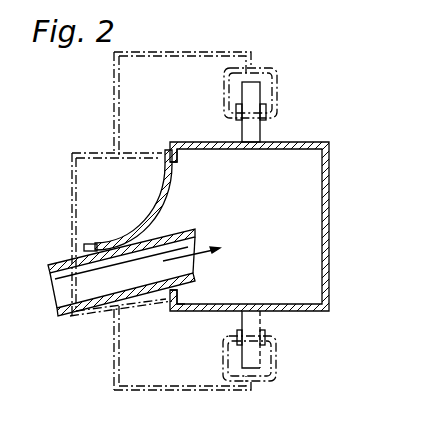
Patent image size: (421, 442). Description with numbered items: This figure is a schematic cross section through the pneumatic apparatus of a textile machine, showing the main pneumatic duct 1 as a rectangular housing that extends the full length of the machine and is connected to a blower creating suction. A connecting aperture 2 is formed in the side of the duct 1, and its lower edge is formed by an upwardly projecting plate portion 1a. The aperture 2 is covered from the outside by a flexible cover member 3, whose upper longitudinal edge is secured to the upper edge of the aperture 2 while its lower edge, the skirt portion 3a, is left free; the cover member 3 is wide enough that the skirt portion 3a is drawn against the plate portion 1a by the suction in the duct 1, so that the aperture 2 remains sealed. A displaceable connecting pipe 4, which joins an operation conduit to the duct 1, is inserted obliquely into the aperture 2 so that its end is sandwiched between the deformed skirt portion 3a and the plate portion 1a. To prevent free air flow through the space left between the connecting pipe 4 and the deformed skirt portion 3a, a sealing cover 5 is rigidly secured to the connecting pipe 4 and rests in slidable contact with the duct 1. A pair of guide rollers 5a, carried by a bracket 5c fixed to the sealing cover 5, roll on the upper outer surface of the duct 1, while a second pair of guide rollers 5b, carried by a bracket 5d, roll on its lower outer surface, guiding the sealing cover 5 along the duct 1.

The main pneumatic duct 1 is at (331, 217).
The upwardly projecting plate portion 1a is at (177, 293).
The connecting aperture 2 is at (168, 218).
The flexible cover member 3 is at (152, 230).
The skirt portion 3a is at (95, 246).
The displaceable connecting pipe 4 is at (60, 306).
The sealing cover 5 is at (86, 150).
The guide rollers 5a is at (252, 106).
The guide rollers 5b is at (252, 358).
The bracket 5c is at (170, 52).
The bracket 5d is at (178, 390).